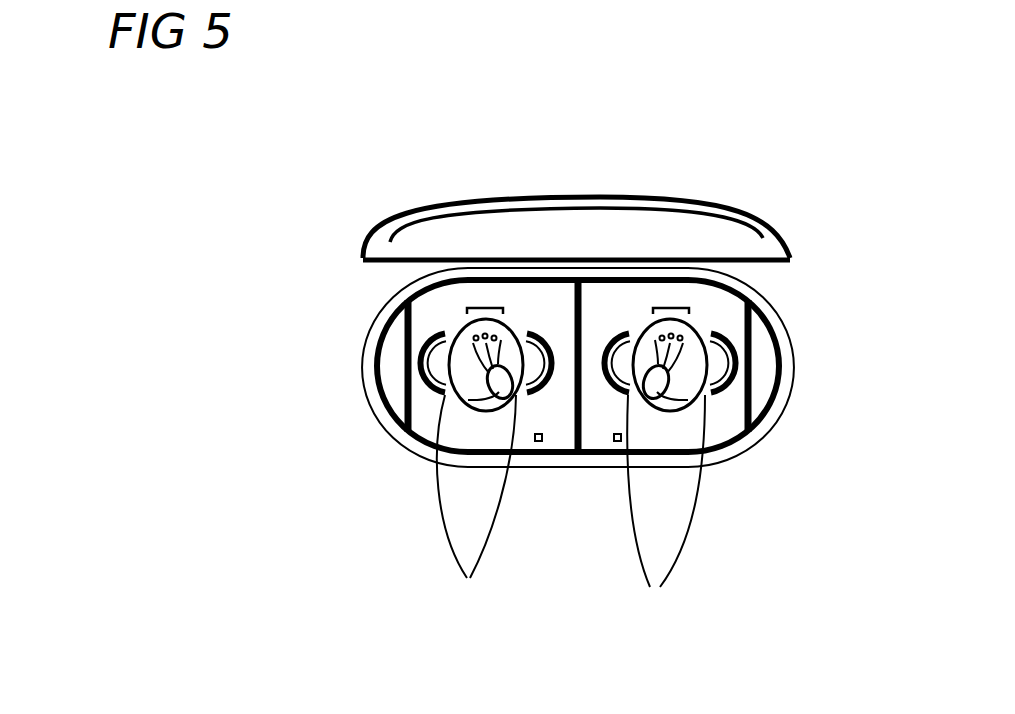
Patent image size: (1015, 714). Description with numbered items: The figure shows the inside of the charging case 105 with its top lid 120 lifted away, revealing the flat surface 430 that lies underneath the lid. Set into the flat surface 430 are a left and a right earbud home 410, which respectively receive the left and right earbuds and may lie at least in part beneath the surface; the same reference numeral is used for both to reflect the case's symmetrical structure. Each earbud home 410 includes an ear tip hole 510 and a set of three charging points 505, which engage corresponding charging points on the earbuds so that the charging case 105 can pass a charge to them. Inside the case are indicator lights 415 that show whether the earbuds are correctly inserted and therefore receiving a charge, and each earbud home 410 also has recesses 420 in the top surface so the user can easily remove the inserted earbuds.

The charging case 105 is at (784, 117).
The top lid 120 is at (706, 208).
The flat surface 430 is at (538, 307).
The earbud home 410 is at (802, 433).
The indicator lights 415 is at (615, 443).
The recesses 420 is at (563, 524).
The charging points 505 is at (810, 280).
The ear tip holes 510 is at (888, 385).